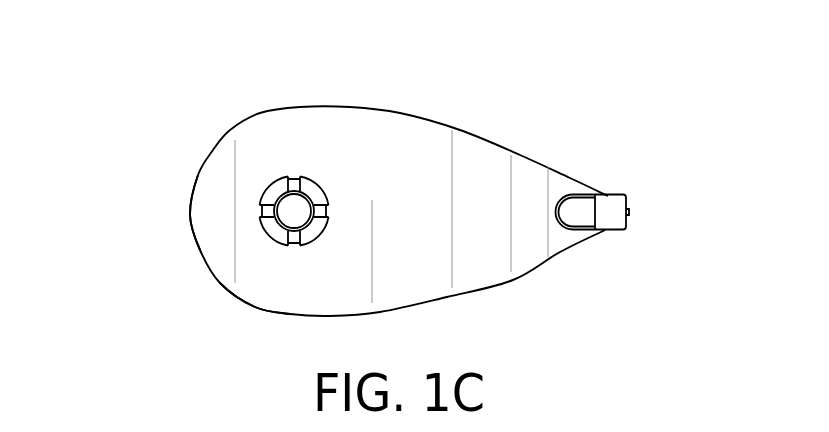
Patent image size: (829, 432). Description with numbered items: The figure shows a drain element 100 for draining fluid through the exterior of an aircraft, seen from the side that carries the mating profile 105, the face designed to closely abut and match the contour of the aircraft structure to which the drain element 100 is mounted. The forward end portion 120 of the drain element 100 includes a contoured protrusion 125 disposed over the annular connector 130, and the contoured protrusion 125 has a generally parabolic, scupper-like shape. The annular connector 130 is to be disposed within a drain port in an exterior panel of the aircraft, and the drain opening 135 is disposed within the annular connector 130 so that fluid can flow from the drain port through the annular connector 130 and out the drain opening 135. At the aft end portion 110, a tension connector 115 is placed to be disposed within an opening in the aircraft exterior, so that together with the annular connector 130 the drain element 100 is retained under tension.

The drain element 100 is at (236, 98).
The mating profile 105 is at (500, 156).
The aft end portion 110 is at (598, 233).
The tension connector 115 is at (615, 202).
The forward end portion 120 is at (192, 232).
The contoured protrusion 125 is at (253, 307).
The annular connector 130 is at (268, 190).
The drain opening 135 is at (300, 207).